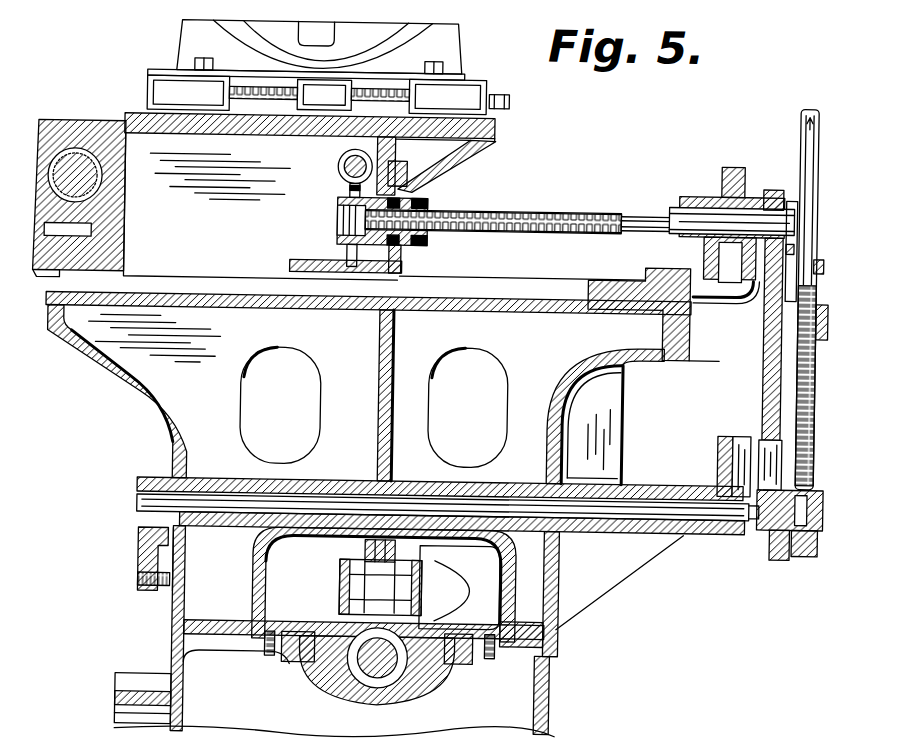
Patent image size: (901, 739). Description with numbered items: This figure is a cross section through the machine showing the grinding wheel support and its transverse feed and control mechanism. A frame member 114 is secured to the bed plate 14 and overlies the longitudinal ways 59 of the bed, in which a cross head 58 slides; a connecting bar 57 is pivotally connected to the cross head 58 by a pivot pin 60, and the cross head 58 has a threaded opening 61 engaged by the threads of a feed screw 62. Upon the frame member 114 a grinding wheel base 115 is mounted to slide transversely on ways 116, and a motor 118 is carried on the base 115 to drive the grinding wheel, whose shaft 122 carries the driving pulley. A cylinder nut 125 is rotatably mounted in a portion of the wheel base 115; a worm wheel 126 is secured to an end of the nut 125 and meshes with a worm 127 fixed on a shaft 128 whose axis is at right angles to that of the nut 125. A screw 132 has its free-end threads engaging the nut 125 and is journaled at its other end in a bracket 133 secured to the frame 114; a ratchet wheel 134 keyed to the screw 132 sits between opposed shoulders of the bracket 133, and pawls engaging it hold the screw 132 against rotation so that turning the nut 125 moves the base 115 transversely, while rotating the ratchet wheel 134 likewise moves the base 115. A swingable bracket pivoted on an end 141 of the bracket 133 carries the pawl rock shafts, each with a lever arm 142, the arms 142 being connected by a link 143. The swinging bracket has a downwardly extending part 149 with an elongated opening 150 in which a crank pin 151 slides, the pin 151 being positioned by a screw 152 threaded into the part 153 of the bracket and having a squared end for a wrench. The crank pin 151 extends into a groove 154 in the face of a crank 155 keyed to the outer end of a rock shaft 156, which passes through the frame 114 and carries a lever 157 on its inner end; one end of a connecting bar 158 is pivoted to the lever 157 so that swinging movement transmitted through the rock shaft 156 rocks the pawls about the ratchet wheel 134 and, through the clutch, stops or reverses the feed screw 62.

The bed plate 14 is at (127, 686).
The connecting bar 57 is at (446, 601).
The cross head 58 is at (321, 671).
The ways 59 is at (307, 636).
The pivot pin 60 is at (368, 592).
The threaded opening 61 is at (403, 676).
The feed screw 62 is at (377, 674).
The frame member 114 is at (190, 433).
The grinding wheel base 115 is at (452, 150).
The ways 116 is at (41, 287).
The motor 118 is at (186, 37).
The shaft 122 is at (70, 171).
The cylinder nut 125 is at (339, 234).
The worm wheel 126 is at (347, 192).
The worm 127 is at (336, 170).
The shaft 128 is at (342, 162).
The screw 132 is at (562, 203).
The bracket 133 is at (670, 269).
The ratchet wheel 134 is at (722, 186).
The end of bracket 141 is at (768, 187).
The lever arm 142 is at (793, 243).
The link 143 is at (818, 260).
The downwardly extending part 149 is at (767, 407).
The elongated opening 150 is at (778, 456).
The crank pin 151 is at (749, 523).
The screw 152 is at (816, 394).
The part of bracket 153 is at (825, 304).
The groove 154 is at (739, 460).
The crank 155 is at (710, 532).
The rock shaft 156 is at (505, 498).
The lever 157 is at (141, 567).
The connecting bar 158 is at (161, 596).